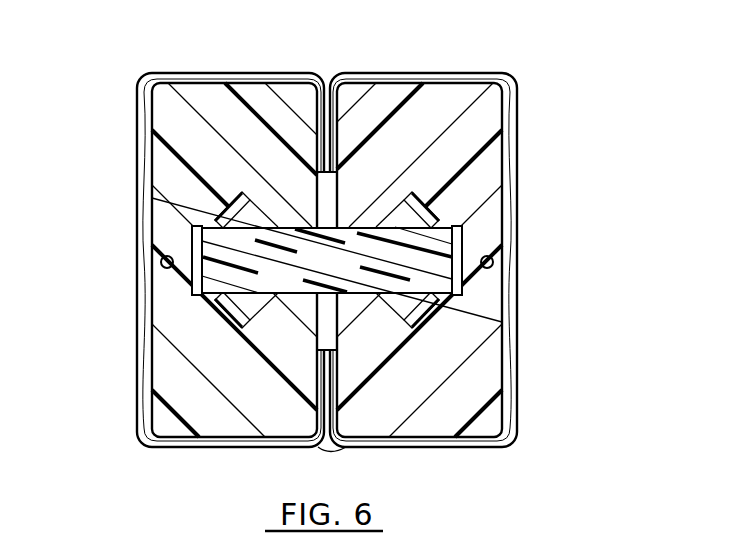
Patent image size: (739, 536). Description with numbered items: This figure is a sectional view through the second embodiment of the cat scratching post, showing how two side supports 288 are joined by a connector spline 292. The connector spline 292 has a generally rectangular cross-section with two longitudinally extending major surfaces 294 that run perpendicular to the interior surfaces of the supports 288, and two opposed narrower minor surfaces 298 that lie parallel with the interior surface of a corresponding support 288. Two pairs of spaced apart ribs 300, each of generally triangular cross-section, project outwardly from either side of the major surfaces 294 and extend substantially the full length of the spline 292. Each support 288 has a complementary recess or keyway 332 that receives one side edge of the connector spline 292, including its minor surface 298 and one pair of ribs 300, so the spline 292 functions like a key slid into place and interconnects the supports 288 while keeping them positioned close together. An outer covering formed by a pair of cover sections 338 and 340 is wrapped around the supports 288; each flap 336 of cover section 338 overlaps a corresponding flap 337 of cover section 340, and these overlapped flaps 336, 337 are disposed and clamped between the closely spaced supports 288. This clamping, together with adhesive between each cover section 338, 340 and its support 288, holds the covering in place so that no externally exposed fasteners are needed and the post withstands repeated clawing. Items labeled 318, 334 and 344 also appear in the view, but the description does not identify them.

The support 288 is at (167, 367).
The connector spline 292 is at (337, 277).
The major surface 294 is at (341, 225).
The minor surface 298 is at (215, 300).
The rib 300 is at (152, 202).
The pin 318 is at (161, 265).
The recess 332 is at (192, 237).
The upper joint 334 is at (340, 177).
The flap 336 is at (314, 128).
The flap 337 is at (341, 124).
The cover section 338 is at (130, 400).
The cover section 340 is at (527, 337).
The bottom joint 344 is at (330, 445).